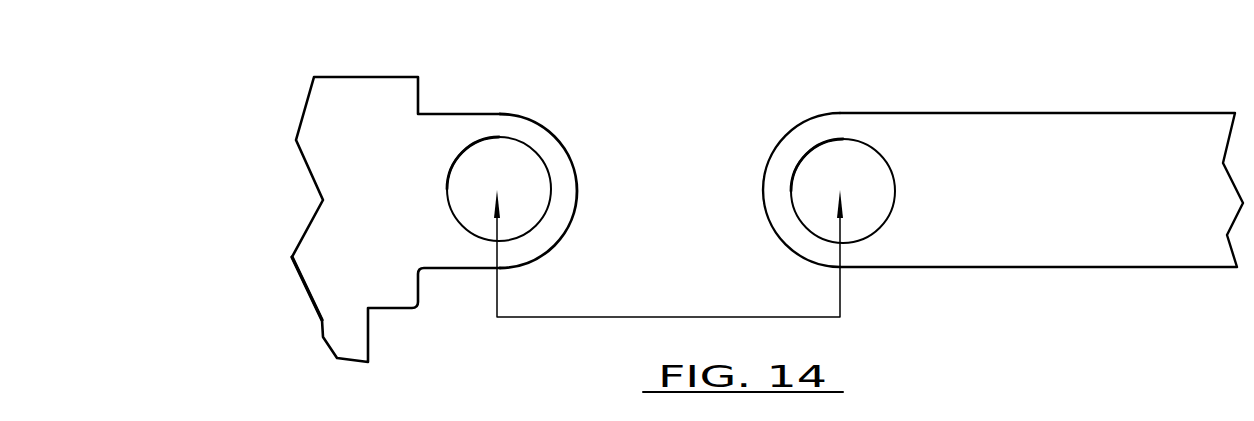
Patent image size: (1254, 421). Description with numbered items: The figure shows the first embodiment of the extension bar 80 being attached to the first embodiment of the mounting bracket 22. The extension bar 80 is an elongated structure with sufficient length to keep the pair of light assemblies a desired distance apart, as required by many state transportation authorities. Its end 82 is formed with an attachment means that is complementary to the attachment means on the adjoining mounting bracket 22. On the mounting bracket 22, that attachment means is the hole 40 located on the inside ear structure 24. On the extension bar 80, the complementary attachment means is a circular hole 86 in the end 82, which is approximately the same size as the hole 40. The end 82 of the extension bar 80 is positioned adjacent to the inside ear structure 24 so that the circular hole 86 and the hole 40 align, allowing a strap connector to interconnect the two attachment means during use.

The mounting bracket 22 is at (288, 136).
The inside ear structure 24 is at (465, 104).
The hole 40 is at (508, 162).
The extension bar 80 is at (1090, 106).
The end 82 is at (787, 135).
The circular hole 86 is at (848, 158).